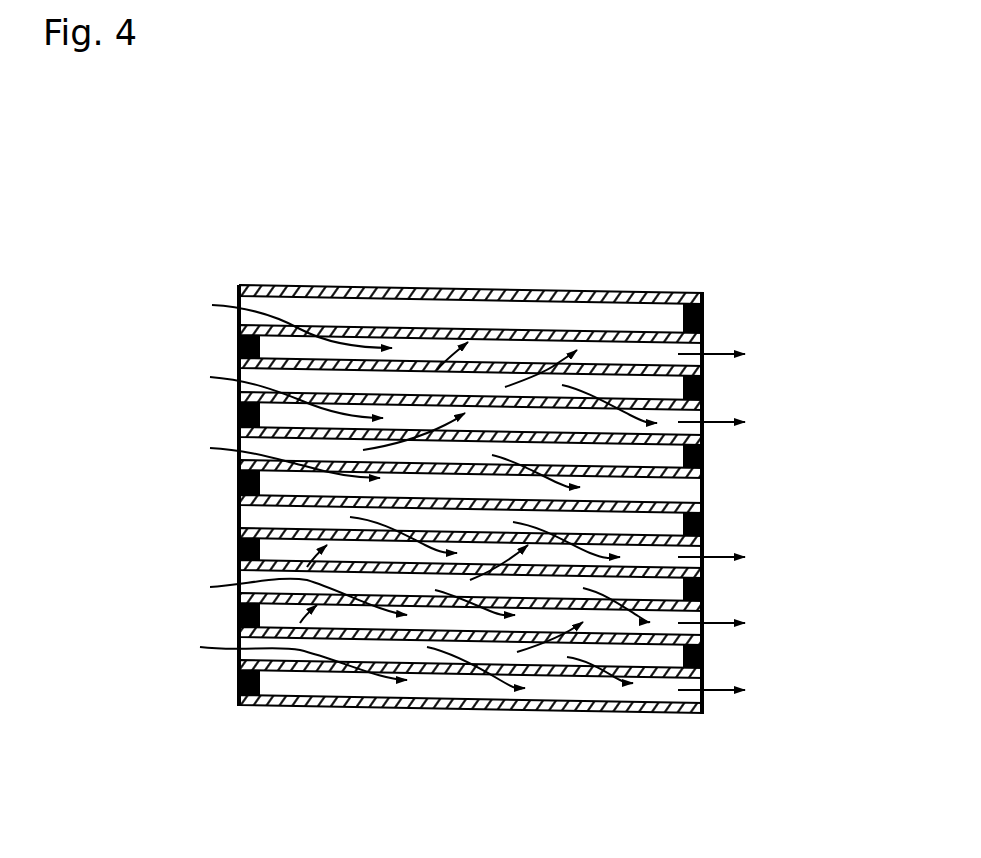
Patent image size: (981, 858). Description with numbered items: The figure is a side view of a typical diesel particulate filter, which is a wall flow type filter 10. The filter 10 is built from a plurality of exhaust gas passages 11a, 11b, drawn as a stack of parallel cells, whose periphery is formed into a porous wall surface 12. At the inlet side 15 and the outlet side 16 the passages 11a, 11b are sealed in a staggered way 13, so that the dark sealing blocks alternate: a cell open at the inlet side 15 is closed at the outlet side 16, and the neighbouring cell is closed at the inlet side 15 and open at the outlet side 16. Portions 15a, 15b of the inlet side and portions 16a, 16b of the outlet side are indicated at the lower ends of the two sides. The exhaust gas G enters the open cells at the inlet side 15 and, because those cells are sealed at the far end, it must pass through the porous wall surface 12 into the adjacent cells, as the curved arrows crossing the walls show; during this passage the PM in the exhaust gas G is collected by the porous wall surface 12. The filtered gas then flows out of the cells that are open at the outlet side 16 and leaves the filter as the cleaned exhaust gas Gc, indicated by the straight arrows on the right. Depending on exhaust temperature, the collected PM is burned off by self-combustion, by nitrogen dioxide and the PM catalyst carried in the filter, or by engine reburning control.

The wall flow type filter 10 is at (505, 280).
The exhaust gas passage 11a is at (418, 643).
The exhaust gas passage 11b is at (340, 680).
The porous wall surface 12 is at (555, 675).
The staggered sealing 13 is at (238, 343).
The inlet side 15 is at (228, 282).
The left header wall lower portion 15a is at (238, 655).
The left closure block 15b is at (245, 700).
The outlet side 16 is at (725, 297).
The right header wall lower portion 16a is at (663, 695).
The right closure block 16b is at (705, 648).
The exhaust gas G is at (332, 478).
The gas outlet flow Gc is at (680, 491).